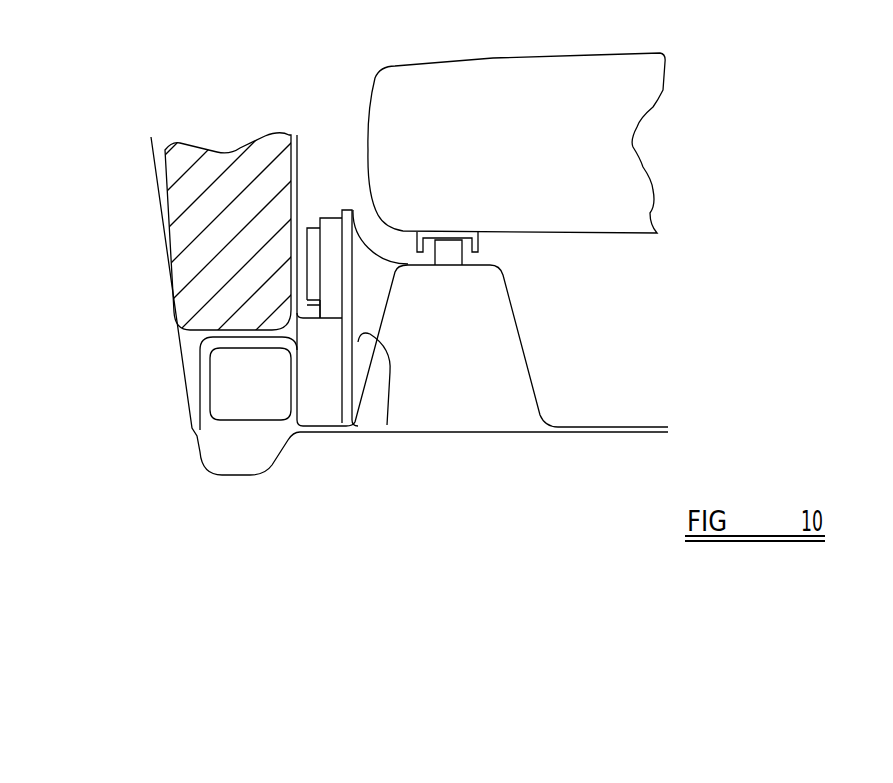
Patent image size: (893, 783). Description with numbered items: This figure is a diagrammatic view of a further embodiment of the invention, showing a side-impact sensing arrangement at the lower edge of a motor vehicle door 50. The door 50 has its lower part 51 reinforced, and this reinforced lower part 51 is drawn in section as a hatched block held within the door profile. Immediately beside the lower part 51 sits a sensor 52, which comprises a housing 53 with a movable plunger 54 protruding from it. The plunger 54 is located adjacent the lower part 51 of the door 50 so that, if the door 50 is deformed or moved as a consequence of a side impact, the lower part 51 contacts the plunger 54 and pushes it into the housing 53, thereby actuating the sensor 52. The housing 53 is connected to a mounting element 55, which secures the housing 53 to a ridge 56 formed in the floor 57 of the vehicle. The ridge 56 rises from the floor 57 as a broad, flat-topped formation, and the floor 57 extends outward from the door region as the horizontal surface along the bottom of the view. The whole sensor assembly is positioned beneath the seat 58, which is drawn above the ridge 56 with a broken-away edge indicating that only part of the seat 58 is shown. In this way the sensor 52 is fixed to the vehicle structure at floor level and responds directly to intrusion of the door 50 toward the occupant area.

The door 50 is at (153, 153).
The lower part 51 is at (170, 221).
The sensor 52 is at (330, 192).
The housing 53 is at (323, 318).
The movable plunger 54 is at (297, 322).
The mounting element 55 is at (387, 425).
The ridge 56 is at (528, 370).
The floor 57 is at (607, 434).
The seat 58 is at (577, 73).